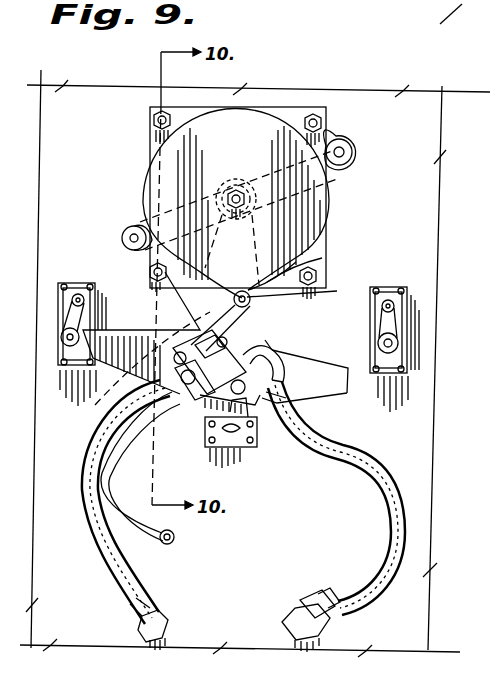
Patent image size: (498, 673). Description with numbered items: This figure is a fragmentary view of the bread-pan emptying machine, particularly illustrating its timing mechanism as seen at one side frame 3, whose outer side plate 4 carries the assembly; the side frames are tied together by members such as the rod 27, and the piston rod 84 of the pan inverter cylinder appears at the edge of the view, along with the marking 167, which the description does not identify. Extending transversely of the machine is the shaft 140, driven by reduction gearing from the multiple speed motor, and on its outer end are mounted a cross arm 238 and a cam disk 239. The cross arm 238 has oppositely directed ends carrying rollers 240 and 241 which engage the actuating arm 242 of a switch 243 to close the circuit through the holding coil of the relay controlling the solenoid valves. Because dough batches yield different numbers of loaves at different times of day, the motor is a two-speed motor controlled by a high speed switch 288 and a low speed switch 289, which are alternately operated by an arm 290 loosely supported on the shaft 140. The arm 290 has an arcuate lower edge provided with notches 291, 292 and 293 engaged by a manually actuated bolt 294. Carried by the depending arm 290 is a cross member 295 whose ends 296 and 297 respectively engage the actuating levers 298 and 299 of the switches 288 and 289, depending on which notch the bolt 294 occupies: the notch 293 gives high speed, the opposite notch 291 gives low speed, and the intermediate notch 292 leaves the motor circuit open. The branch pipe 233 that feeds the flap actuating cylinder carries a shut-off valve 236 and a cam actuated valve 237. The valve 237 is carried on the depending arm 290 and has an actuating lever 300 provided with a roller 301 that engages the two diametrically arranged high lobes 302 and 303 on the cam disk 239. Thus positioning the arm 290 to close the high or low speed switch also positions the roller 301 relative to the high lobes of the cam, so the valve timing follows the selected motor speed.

The side frame 3 is at (423, 102).
The outer side plate 4 is at (438, 133).
The sheet marking 167 is at (443, 25).
The piston rod 84 is at (449, 8).
The rod 27 is at (481, 19).
The shaft 140 is at (236, 190).
The branch pipe 233 is at (392, 532).
The shut-off valve 236 is at (311, 599).
The cam actuated valve 237 is at (198, 405).
The cross arm 238 is at (346, 170).
The cam disk 239 is at (315, 213).
The roller 240 is at (345, 142).
The roller 241 is at (124, 231).
The actuating arm 242 is at (258, 327).
The switch 243 is at (192, 291).
The high speed switch 288 is at (58, 292).
The low speed switch 289 is at (407, 313).
The arm 290 is at (265, 351).
The notch 291 is at (173, 412).
The notch 292 is at (205, 443).
The notch 293 is at (248, 448).
The bolt 294 is at (220, 448).
The cross member 295 is at (332, 390).
The end 296 is at (60, 372).
The end 297 is at (350, 392).
The actuating lever 298 is at (80, 317).
The actuating lever 299 is at (400, 345).
The actuating lever 300 is at (295, 303).
The roller 301 is at (316, 266).
The high lobe 302 is at (150, 186).
The high lobe 303 is at (318, 252).